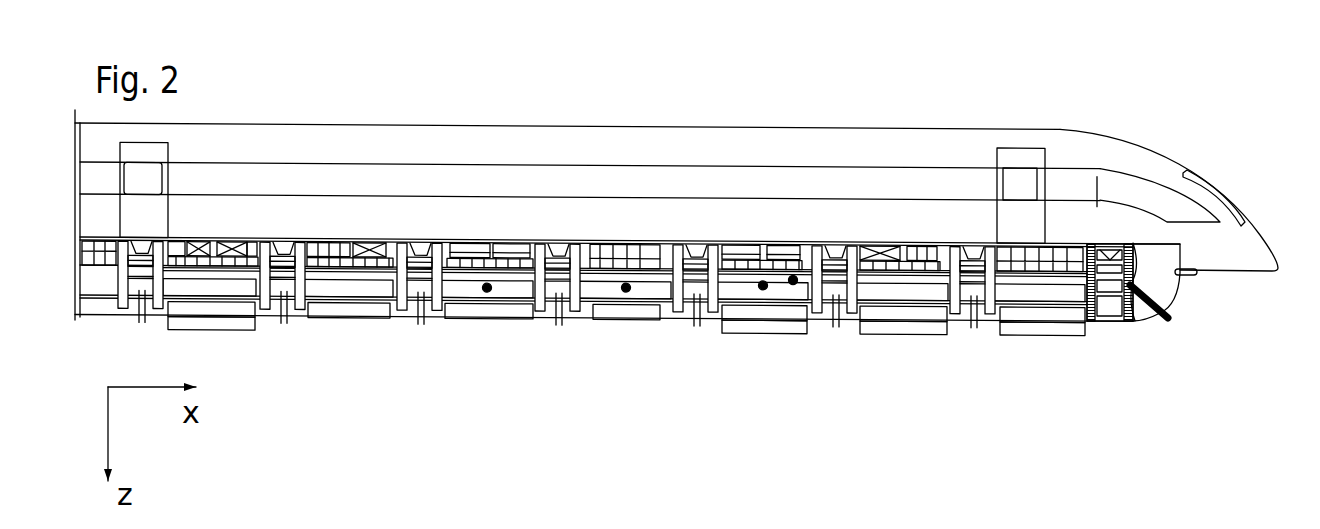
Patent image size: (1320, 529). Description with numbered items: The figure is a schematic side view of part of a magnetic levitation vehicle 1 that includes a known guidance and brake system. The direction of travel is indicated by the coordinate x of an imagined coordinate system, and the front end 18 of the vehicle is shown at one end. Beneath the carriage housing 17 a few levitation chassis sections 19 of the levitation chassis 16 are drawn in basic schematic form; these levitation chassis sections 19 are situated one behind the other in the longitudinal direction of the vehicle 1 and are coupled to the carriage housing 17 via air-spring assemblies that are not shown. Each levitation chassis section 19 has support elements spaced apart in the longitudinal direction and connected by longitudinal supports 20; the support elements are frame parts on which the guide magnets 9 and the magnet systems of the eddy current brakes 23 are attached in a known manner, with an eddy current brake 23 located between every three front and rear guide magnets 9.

The magnetic levitation vehicle 1 is at (667, 115).
The guide magnets 9 is at (487, 290).
The levitation chassis 16 is at (989, 522).
The carriage housing 17 is at (348, 141).
The front end 18 is at (1220, 253).
The levitation chassis sections 19 is at (892, 311).
The longitudinal supports 20 is at (793, 280).
The eddy current brakes 23 is at (626, 289).